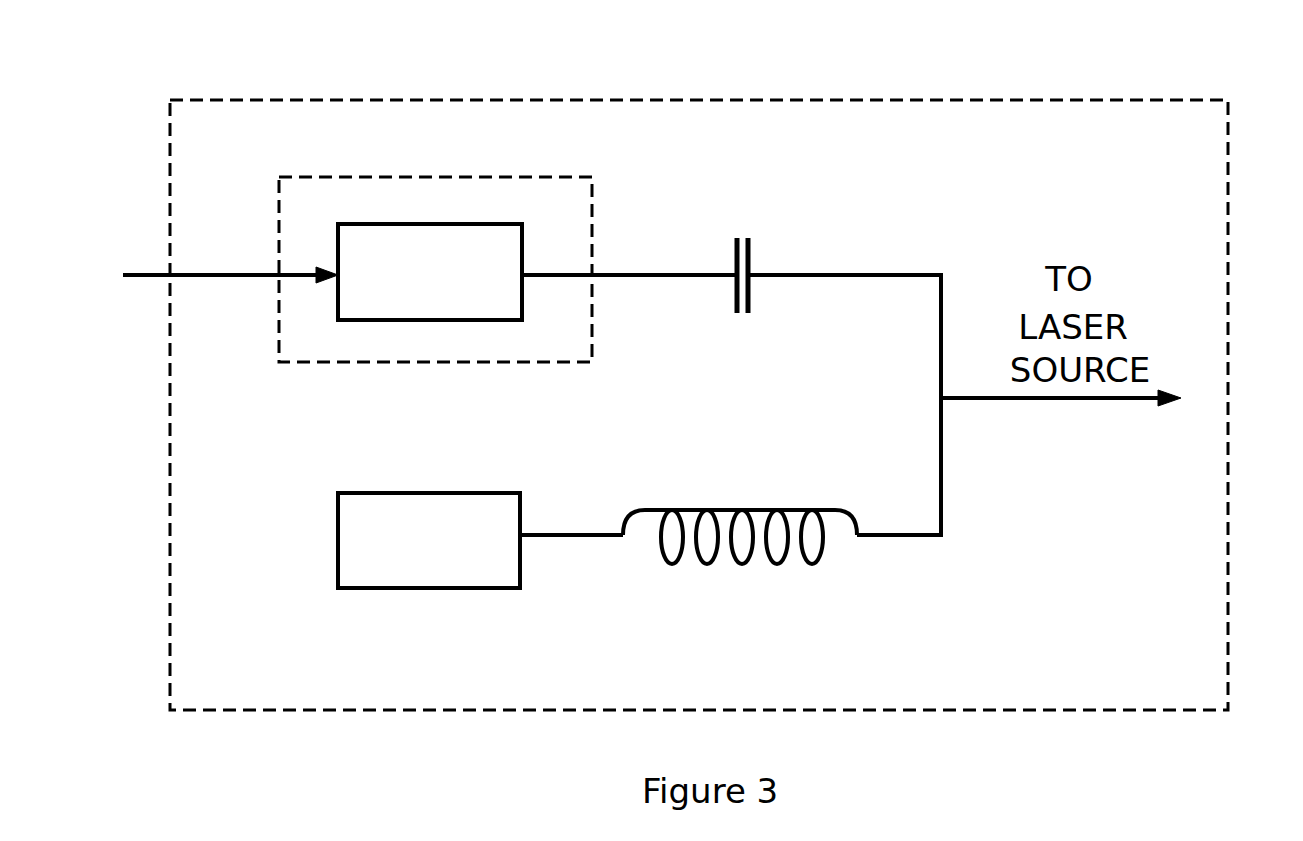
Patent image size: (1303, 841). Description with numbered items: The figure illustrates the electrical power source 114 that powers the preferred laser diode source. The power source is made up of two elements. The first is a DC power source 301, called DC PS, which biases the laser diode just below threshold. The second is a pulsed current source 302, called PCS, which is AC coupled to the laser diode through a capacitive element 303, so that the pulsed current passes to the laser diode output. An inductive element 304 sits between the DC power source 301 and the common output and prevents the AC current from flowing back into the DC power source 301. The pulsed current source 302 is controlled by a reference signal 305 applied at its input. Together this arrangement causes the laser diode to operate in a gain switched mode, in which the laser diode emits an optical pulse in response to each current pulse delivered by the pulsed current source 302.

The electrical power source 114 is at (878, 88).
The DC power source 301 is at (428, 598).
The pulsed current source 302 is at (603, 202).
The capacitive element 303 is at (757, 225).
The inductive element 304 is at (741, 573).
The reference signal 305 is at (238, 292).